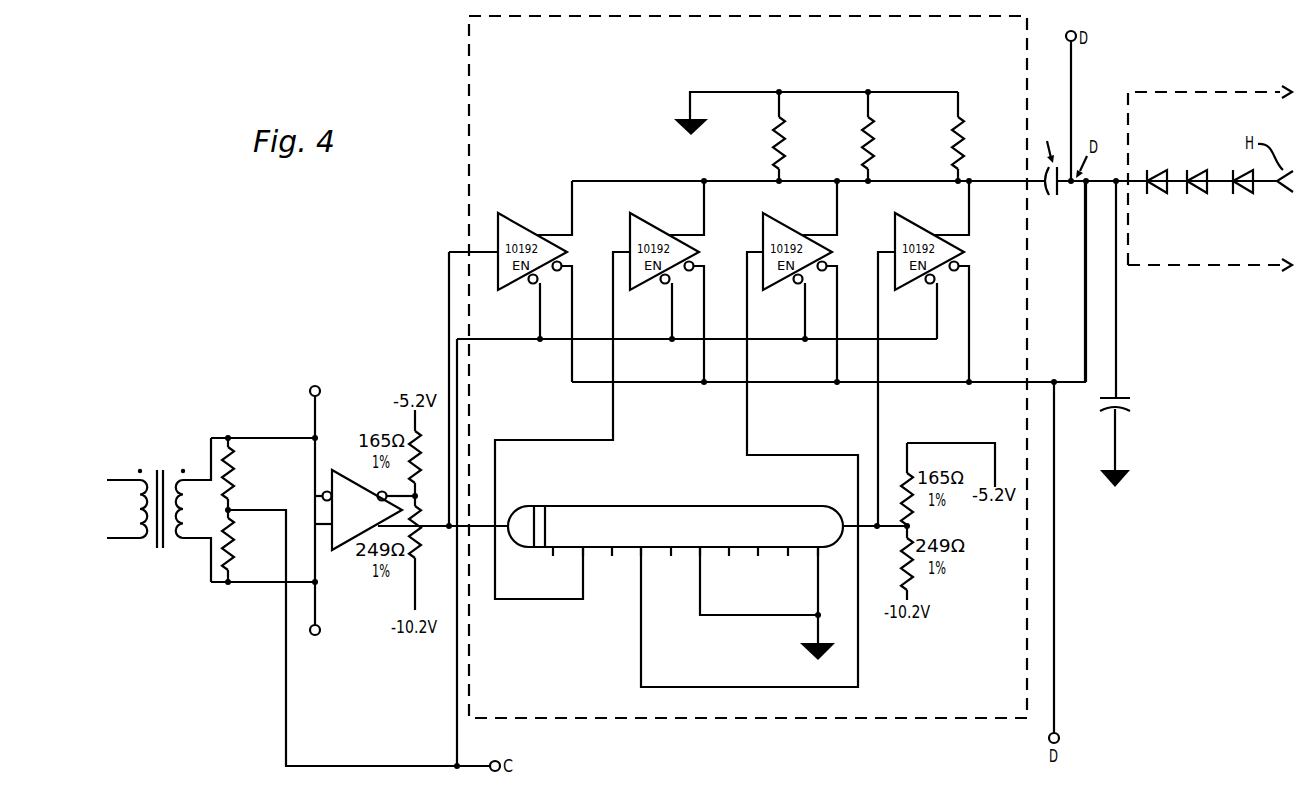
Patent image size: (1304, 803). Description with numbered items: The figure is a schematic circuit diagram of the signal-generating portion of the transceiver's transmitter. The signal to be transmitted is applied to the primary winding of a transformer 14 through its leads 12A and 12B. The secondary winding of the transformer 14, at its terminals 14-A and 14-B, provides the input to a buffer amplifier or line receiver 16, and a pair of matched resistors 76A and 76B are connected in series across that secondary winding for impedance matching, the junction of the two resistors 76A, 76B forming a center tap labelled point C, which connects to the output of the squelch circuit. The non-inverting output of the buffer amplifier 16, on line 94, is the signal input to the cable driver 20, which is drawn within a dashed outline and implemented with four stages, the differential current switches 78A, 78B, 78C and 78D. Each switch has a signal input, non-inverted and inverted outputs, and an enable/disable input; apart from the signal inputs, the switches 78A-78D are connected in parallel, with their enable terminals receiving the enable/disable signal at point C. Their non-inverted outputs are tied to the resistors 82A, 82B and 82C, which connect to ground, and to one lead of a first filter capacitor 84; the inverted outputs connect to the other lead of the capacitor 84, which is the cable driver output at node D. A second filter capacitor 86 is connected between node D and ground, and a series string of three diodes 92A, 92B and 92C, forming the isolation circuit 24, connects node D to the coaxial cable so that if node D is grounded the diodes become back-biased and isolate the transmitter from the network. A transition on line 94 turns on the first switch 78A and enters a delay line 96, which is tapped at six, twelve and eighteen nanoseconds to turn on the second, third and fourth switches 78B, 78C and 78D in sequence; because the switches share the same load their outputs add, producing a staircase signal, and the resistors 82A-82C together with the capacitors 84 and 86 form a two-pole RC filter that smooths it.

The cable driver 20 is at (535, 67).
The isolation circuit 24 is at (1172, 132).
The primary winding lead 12A is at (130, 478).
The primary winding lead 12B is at (125, 541).
The transformer 14 is at (160, 552).
The transformer secondary terminal 14-A is at (310, 391).
The transformer secondary terminal 14-B is at (315, 636).
The matched resistor 76A is at (222, 465).
The matched resistor 76B is at (222, 548).
The buffer amplifier 16 is at (347, 553).
The line 94 is at (431, 521).
The current switch 78A is at (513, 212).
The current switch 78B is at (663, 228).
The current switch 78C is at (782, 218).
The current switch 78D is at (918, 224).
The resistor 82A is at (773, 142).
The resistor 82B is at (860, 142).
The resistor 82C is at (950, 142).
The delay line 96 is at (673, 506).
The first filter capacitor 84 is at (1060, 193).
The second filter capacitor 86 is at (1100, 412).
The diode 92A is at (1159, 195).
The diode 92B is at (1200, 195).
The diode 92C is at (1245, 195).